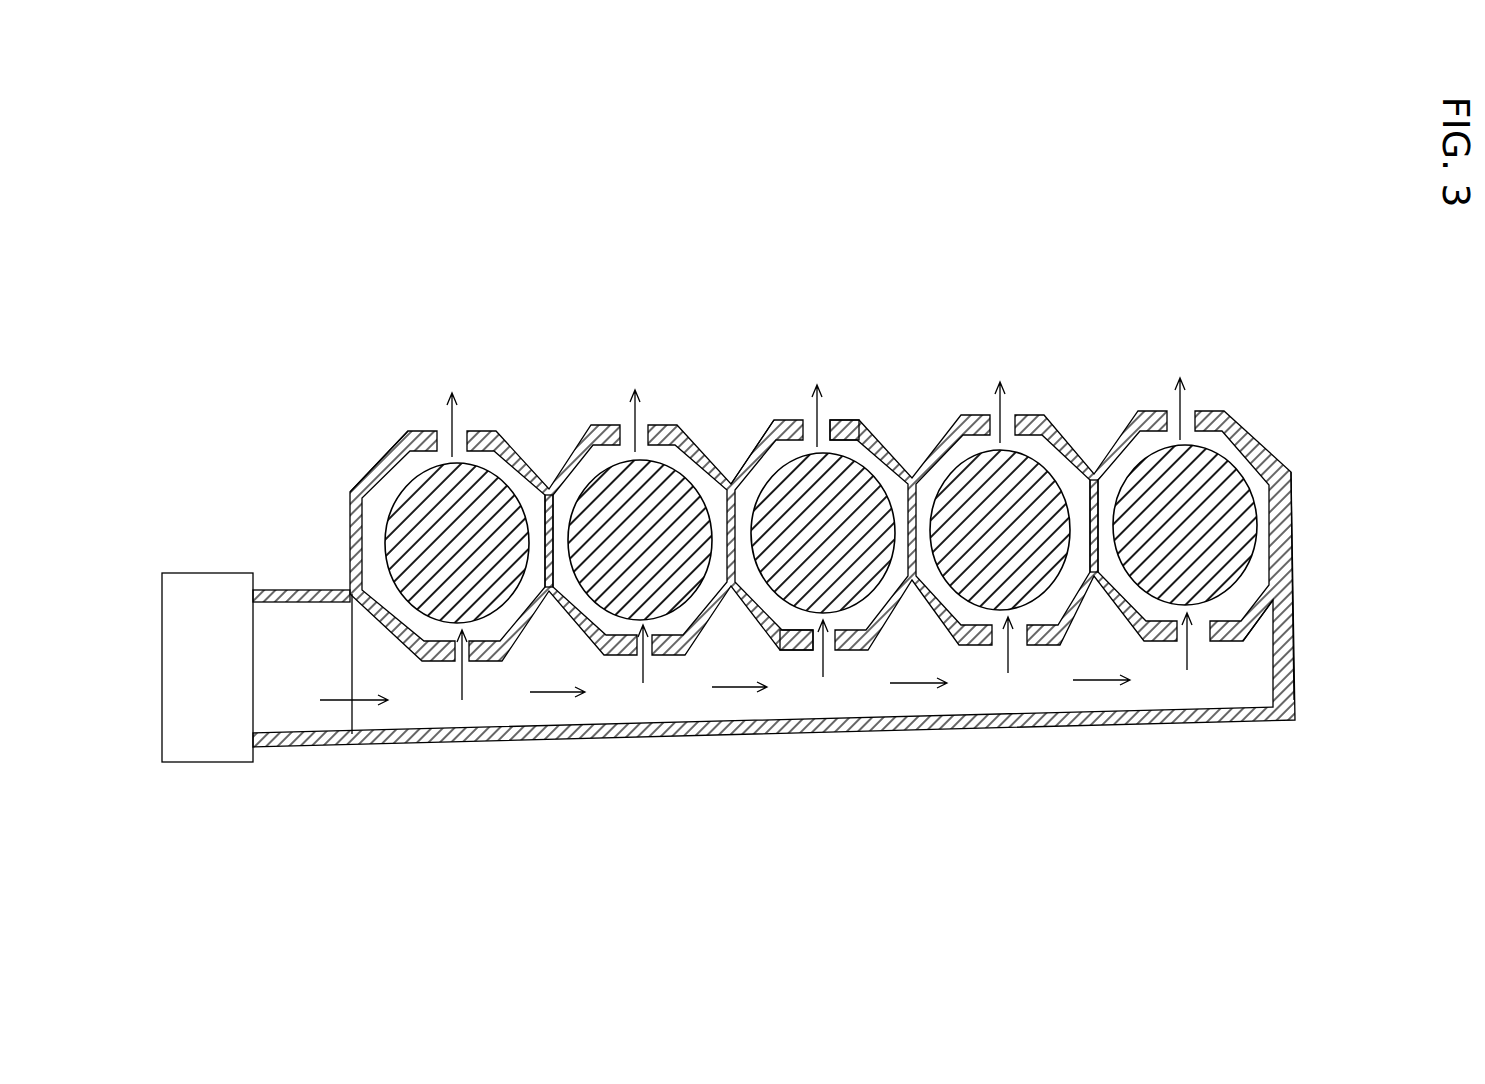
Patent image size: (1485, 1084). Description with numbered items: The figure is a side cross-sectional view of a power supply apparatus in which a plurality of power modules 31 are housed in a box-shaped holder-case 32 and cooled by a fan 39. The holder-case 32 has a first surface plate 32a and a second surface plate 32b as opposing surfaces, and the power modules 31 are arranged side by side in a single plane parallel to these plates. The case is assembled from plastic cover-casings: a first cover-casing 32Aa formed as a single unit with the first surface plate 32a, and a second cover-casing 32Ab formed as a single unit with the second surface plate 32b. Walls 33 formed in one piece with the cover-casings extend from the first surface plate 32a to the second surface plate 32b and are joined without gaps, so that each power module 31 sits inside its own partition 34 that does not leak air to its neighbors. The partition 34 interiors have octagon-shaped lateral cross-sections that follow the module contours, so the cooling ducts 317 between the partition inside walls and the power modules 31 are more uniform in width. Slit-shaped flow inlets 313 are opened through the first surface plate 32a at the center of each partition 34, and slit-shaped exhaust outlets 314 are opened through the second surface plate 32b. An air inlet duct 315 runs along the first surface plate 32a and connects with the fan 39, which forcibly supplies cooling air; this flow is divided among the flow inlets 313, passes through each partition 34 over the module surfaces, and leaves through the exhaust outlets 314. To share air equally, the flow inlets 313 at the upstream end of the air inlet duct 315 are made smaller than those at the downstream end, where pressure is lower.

The power module 31 is at (418, 533).
The holder-case 32 is at (1405, 455).
The first cover-casing 32Aa is at (1308, 568).
The second cover-casing 32Ab is at (1306, 488).
The first surface plate 32a is at (797, 655).
The second surface plate 32b is at (848, 418).
The wall 33 is at (510, 460).
The partition 34 is at (404, 451).
The flow inlet 313 is at (451, 672).
The exhaust outlet 314 is at (656, 412).
The air inlet duct 315 is at (491, 728).
The cooling duct 317 is at (560, 485).
The fan 39 is at (238, 763).